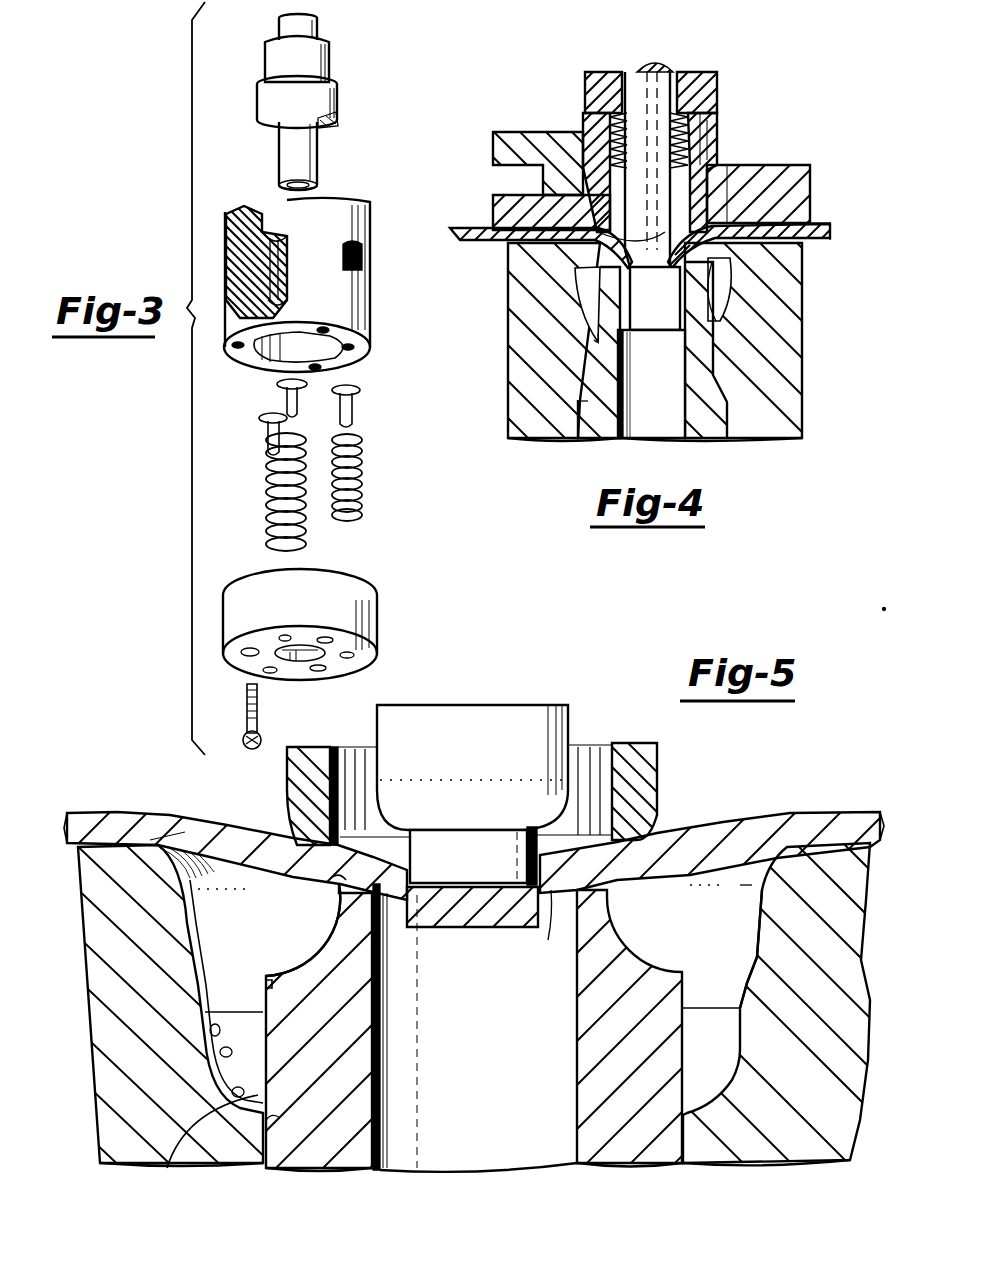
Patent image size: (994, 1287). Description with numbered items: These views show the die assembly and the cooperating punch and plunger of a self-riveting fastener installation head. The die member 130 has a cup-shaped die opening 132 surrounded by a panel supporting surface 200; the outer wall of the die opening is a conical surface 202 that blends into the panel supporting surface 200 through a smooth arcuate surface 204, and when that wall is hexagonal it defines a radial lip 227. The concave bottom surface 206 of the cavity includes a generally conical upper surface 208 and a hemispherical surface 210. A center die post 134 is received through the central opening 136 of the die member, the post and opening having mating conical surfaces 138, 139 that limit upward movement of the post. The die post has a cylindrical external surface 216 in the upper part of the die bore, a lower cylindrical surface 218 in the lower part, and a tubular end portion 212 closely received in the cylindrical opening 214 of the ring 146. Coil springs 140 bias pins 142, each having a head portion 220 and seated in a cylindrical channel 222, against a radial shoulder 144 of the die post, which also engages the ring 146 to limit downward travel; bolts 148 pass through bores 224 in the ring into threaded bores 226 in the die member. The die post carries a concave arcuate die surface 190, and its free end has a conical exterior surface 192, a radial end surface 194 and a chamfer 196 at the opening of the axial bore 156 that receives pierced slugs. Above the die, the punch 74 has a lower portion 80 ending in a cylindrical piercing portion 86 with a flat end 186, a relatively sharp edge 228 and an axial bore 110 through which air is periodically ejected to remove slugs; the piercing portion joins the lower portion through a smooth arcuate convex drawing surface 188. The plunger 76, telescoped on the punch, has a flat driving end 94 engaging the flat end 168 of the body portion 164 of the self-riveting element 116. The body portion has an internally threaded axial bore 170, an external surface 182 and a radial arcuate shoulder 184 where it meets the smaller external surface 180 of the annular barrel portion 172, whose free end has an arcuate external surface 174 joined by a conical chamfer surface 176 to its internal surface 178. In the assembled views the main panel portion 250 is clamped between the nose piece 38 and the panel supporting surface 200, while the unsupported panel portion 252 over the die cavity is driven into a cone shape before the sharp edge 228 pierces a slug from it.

In FIG. 4, the nose piece 38 is at (776, 178).
In FIG. 4, the punch 74 is at (630, 75).
In FIG. 5, the punch 74 is at (518, 730).
In FIG. 4, the plunger 76 is at (712, 72).
In FIG. 5, the lower portion of punch 80 is at (472, 767).
In FIG. 4, the piercing portion 86 is at (640, 272).
In FIG. 5, the piercing portion 86 is at (473, 856).
In FIG. 4, the free driving end of plunger 94 is at (592, 116).
In FIG. 4, the axial bore of punch piercing end 110 is at (652, 62).
In FIG. 4, the self-riveting element 116 is at (700, 140).
In FIG. 3, the die member 130 is at (365, 230).
In FIG. 4, the die member 130 is at (770, 321).
In FIG. 5, the die member 130 is at (495, 983).
In FIG. 3, the cup-shaped die opening 132 is at (256, 212).
In FIG. 4, the cup-shaped die opening 132 is at (572, 287).
In FIG. 5, the cup-shaped die opening 132 is at (170, 1039).
In FIG. 3, the center die post 134 is at (305, 65).
In FIG. 4, the center die post 134 is at (695, 361).
In FIG. 5, the center die post 134 is at (320, 1077).
In FIG. 3, the central axial opening of die member 136 is at (286, 280).
In FIG. 4, the central axial opening of die member 136 is at (592, 340).
In FIG. 5, the central axial opening of die member 136 is at (278, 1125).
In FIG. 3, the conical surface of die post 138 is at (336, 96).
In FIG. 3, the conical surface of die opening 139 is at (284, 300).
In FIG. 3, the coil springs 140 is at (363, 484).
In FIG. 3, the pins 142 is at (353, 412).
In FIG. 3, the radial shoulder of die post 144 is at (338, 128).
In FIG. 3, the retainer ring 146 is at (310, 609).
In FIG. 3, the bolts 148 is at (247, 700).
In FIG. 4, the axial bore of die post 156 is at (672, 386).
In FIG. 5, the axial bore of die post 156 is at (385, 1030).
In FIG. 4, the body portion of self-riveting element 164 is at (590, 136).
In FIG. 4, the flat end of body portion 168 is at (706, 88).
In FIG. 4, the axial bore of self-riveting element 170 is at (715, 122).
In FIG. 4, the annular riveting or barrel portion 172 is at (745, 196).
In FIG. 5, the annular riveting or barrel portion 172 is at (640, 766).
In FIG. 4, the arcuate external surface 174 is at (770, 229).
In FIG. 5, the arcuate external surface 174 is at (652, 842).
In FIG. 5, the conical chamfer surface 176 is at (340, 805).
In FIG. 4, the internal surface of barrel portion 178 is at (590, 212).
In FIG. 5, the internal surface of barrel portion 178 is at (334, 747).
In FIG. 4, the external surface of barrel portion 180 is at (536, 192).
In FIG. 5, the external surface of barrel portion 180 is at (287, 762).
In FIG. 4, the external surface of body portion 182 is at (510, 149).
In FIG. 4, the radial arcuate shoulder 184 is at (720, 166).
In FIG. 5, the flat end of piercing portion 186 is at (472, 930).
In FIG. 4, the arcuate convex drawing surface 188 is at (740, 221).
In FIG. 5, the arcuate convex drawing surface 188 is at (555, 828).
In FIG. 3, the concave arcuate die surface 190 is at (318, 26).
In FIG. 4, the concave arcuate die surface 190 is at (735, 285).
In FIG. 5, the concave arcuate die surface 190 is at (318, 958).
In FIG. 5, the conical exterior surface of die post 192 is at (608, 895).
In FIG. 5, the radial end surface of die post 194 is at (340, 882).
In FIG. 5, the chamfer of die post bore 196 is at (380, 892).
In FIG. 4, the panel supporting surface 200 is at (800, 238).
In FIG. 5, the panel supporting surface 200 is at (113, 808).
In FIG. 5, the conical outer wall surface of die opening 202 is at (760, 905).
In FIG. 5, the smooth arcuate surface 204 is at (772, 858).
In FIG. 3, the bottom surface of die cavity 206 is at (276, 249).
In FIG. 5, the bottom surface of die cavity 206 is at (235, 1060).
In FIG. 5, the conical upper surface of cavity bottom 208 is at (208, 1018).
In FIG. 5, the hemispherical surface 210 is at (203, 1149).
In FIG. 3, the tubular end portion of die post 212 is at (290, 158).
In FIG. 3, the cylindrical opening of ring 214 is at (300, 658).
In FIG. 3, the cylindrical external surface of die post 216 is at (270, 68).
In FIG. 5, the cylindrical external surface of die post 216 is at (262, 990).
In FIG. 3, the lower cylindrical surface of die post 218 is at (262, 113).
In FIG. 3, the head portion of pin 220 is at (358, 390).
In FIG. 3, the cylindrical channels 222 is at (275, 386).
In FIG. 3, the bores in retainer ring 224 is at (250, 656).
In FIG. 3, the threaded bores in die member 226 is at (244, 355).
In FIG. 5, the radial lip 227 is at (750, 992).
In FIG. 5, the sharp edge of piercing portion 228 is at (543, 930).
In FIG. 5, the main panel portion 250 is at (838, 814).
In FIG. 4, the unsupported panel portion 252 is at (600, 258).
In FIG. 5, the unsupported panel portion 252 is at (228, 830).